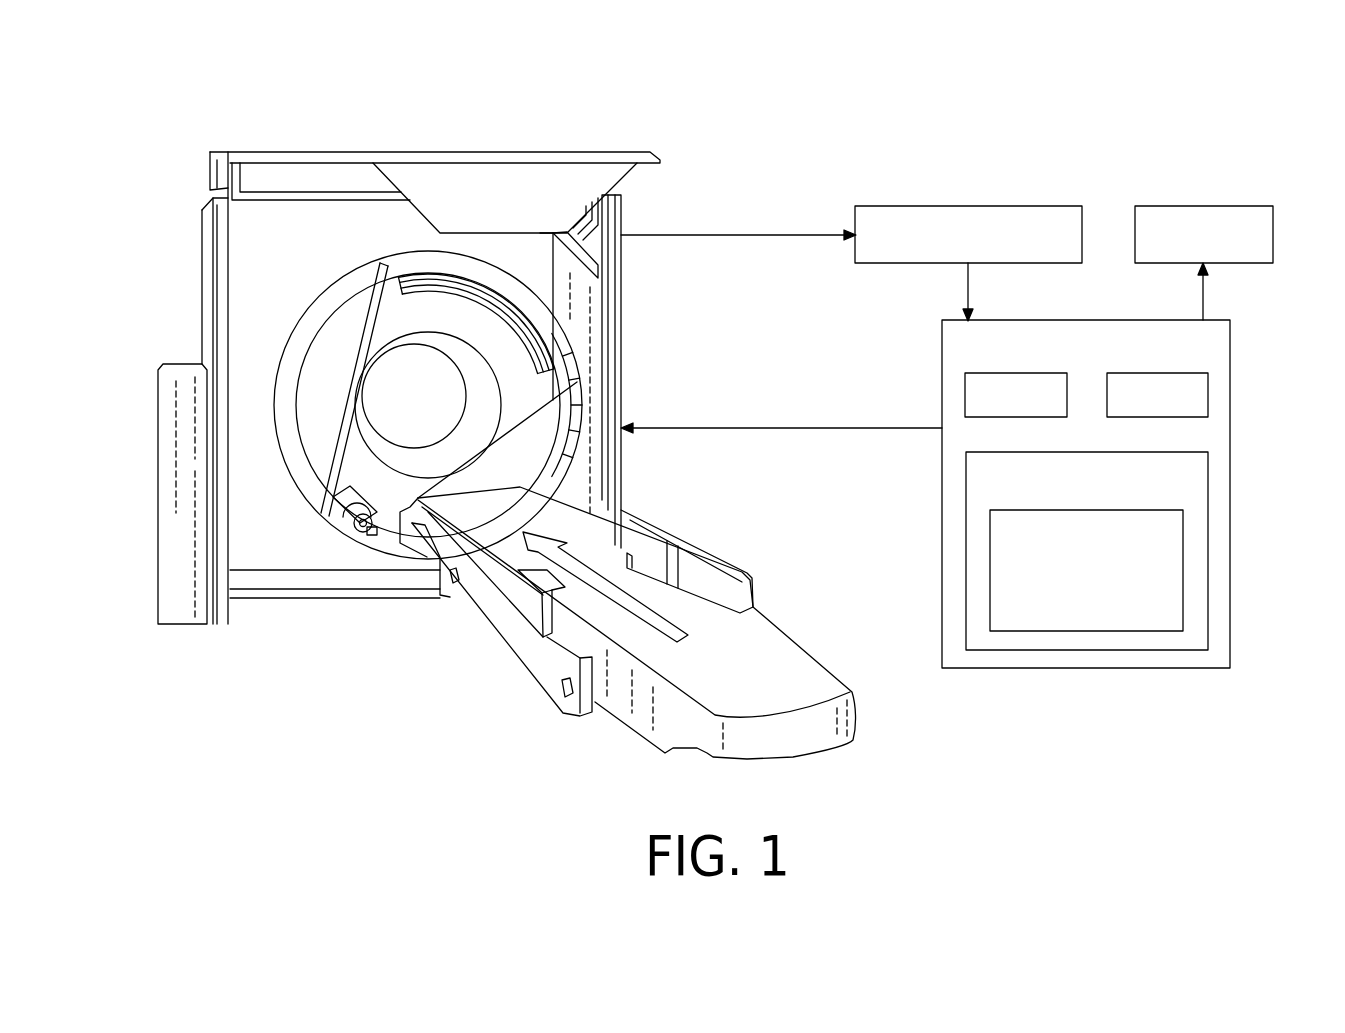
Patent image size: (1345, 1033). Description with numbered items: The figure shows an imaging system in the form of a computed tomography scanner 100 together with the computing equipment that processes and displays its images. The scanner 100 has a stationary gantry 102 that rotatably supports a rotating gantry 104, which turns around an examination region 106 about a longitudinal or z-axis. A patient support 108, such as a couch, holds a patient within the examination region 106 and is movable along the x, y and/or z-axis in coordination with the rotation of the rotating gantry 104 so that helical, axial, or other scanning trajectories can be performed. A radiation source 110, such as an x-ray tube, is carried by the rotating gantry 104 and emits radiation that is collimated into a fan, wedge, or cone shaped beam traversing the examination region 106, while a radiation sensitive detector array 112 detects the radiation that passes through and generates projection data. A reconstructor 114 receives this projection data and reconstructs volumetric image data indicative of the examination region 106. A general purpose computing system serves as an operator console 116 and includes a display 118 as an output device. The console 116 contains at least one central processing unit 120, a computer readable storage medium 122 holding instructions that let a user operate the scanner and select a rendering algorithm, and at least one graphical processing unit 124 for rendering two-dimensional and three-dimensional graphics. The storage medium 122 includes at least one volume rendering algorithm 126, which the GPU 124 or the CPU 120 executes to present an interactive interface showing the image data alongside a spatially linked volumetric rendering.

The computed tomography scanner 100 is at (1122, 103).
The stationary gantry 102 is at (220, 257).
The rotating gantry 104 is at (387, 307).
The examination region 106 is at (434, 407).
The patient support 108 is at (812, 675).
The radiation source 110 is at (358, 533).
The radiation sensitive detector array 112 is at (520, 310).
The reconstructor 114 is at (910, 205).
The operator console 116 is at (1025, 668).
The display 118 is at (1245, 205).
The central processing unit 120 is at (965, 394).
The computer readable storage medium 122 is at (1208, 537).
The graphical processing unit 124 is at (1208, 394).
The volume rendering algorithm 126 is at (1183, 603).